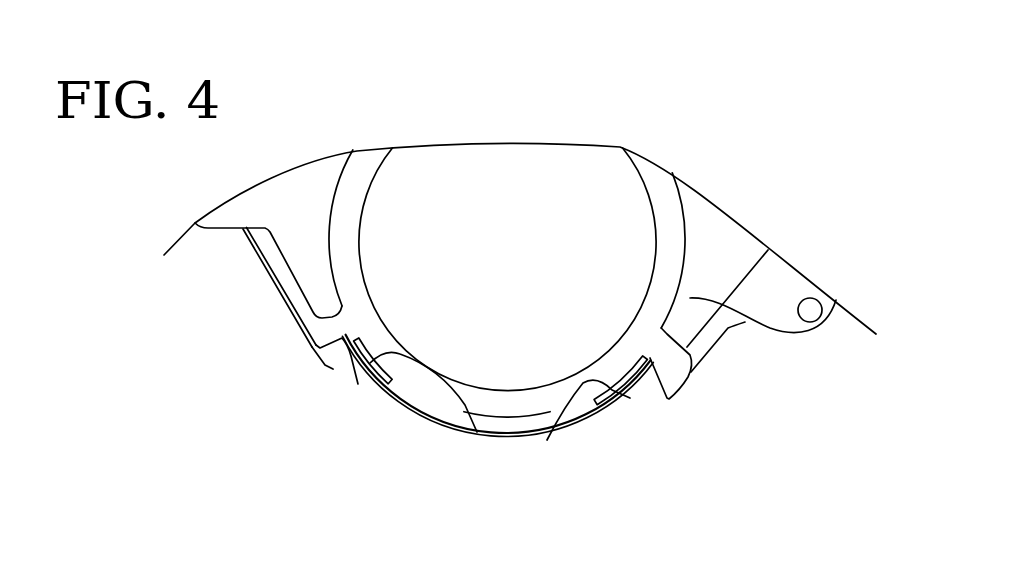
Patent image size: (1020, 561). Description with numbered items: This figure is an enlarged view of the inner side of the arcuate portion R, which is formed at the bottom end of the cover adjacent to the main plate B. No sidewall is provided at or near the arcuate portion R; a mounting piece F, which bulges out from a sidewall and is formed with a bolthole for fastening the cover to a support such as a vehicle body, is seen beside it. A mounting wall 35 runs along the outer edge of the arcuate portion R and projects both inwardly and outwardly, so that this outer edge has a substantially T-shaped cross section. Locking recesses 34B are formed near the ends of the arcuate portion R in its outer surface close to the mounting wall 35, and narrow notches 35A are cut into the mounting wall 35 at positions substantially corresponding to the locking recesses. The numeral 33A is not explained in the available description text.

The mounting lug 33A is at (315, 347).
The narrow notch 35A is at (343, 340).
The mounting wall 35 is at (465, 430).
The locking recess 34B is at (547, 440).
The arcuate portion R is at (565, 417).
The main plate B is at (750, 323).
The mounting piece F is at (815, 323).